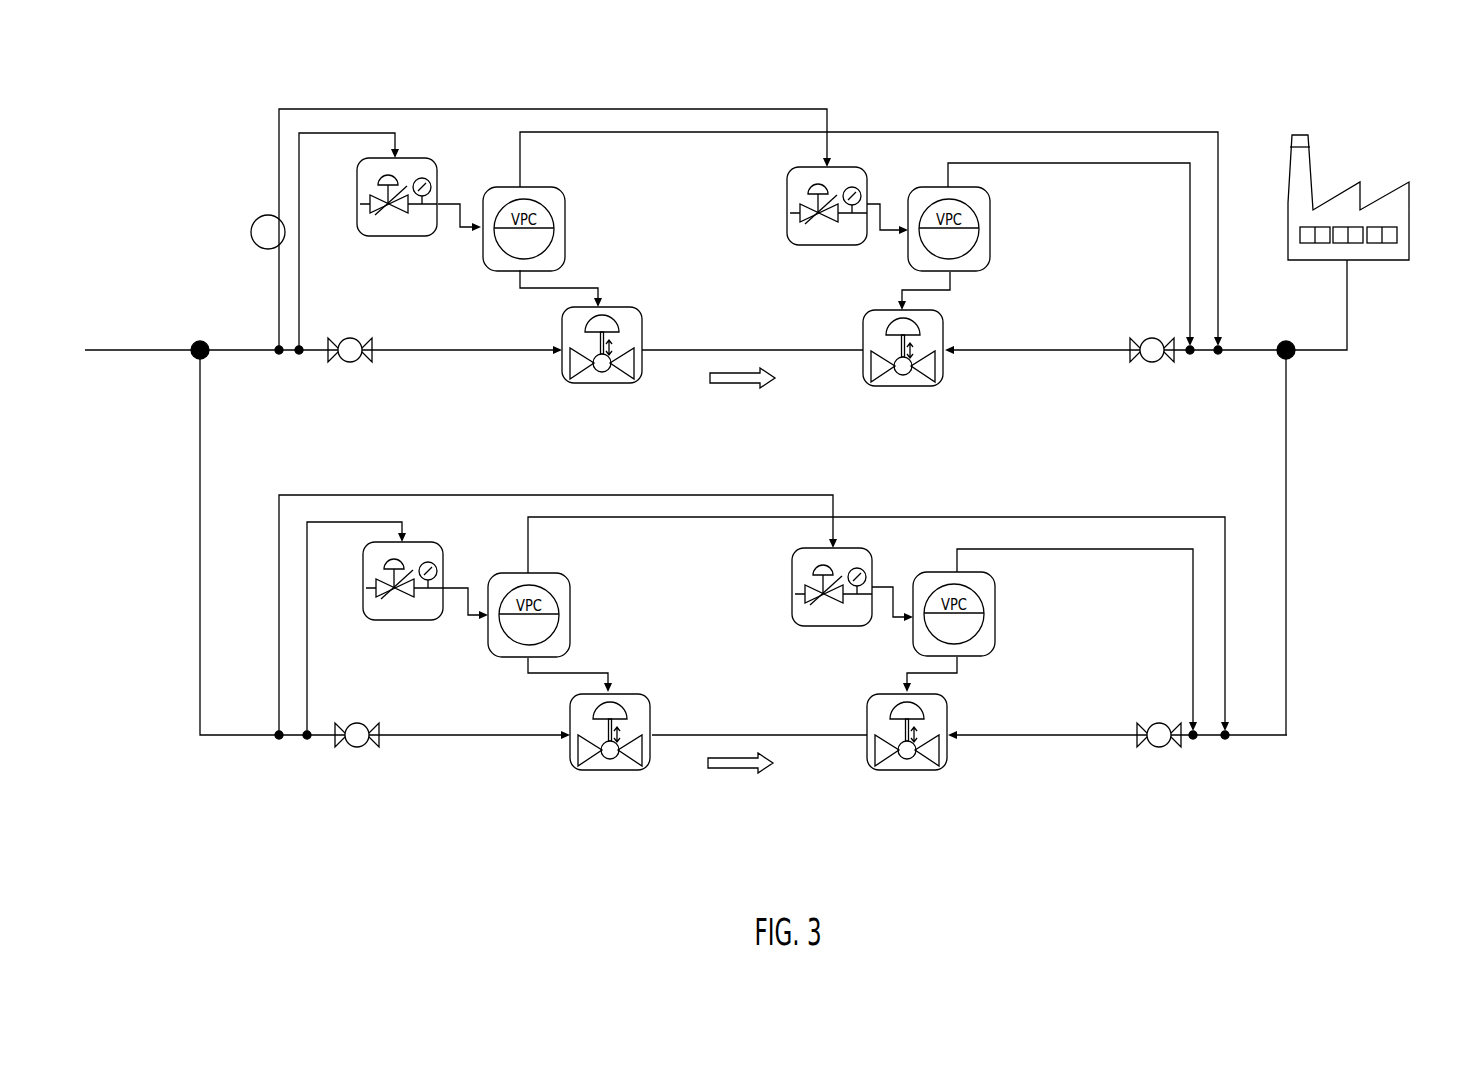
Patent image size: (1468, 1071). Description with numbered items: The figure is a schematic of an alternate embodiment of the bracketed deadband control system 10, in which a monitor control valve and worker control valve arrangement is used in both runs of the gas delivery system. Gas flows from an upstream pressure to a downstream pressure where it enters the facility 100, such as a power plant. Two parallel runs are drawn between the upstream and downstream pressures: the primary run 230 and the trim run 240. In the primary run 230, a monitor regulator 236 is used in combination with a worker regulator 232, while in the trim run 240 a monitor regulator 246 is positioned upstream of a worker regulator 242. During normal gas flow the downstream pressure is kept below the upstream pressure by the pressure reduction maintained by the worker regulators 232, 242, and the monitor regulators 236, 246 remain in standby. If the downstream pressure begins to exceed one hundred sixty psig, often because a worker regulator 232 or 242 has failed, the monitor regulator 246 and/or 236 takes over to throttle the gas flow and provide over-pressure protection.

The bracketed deadband control system 10 is at (194, 132).
The facility 100 is at (1370, 272).
The primary run 230 is at (280, 273).
The worker regulator 232 is at (945, 372).
The monitor regulator 236 is at (643, 338).
The trim run 240 is at (200, 398).
The worker regulator 242 is at (948, 712).
The monitor regulator 246 is at (652, 715).